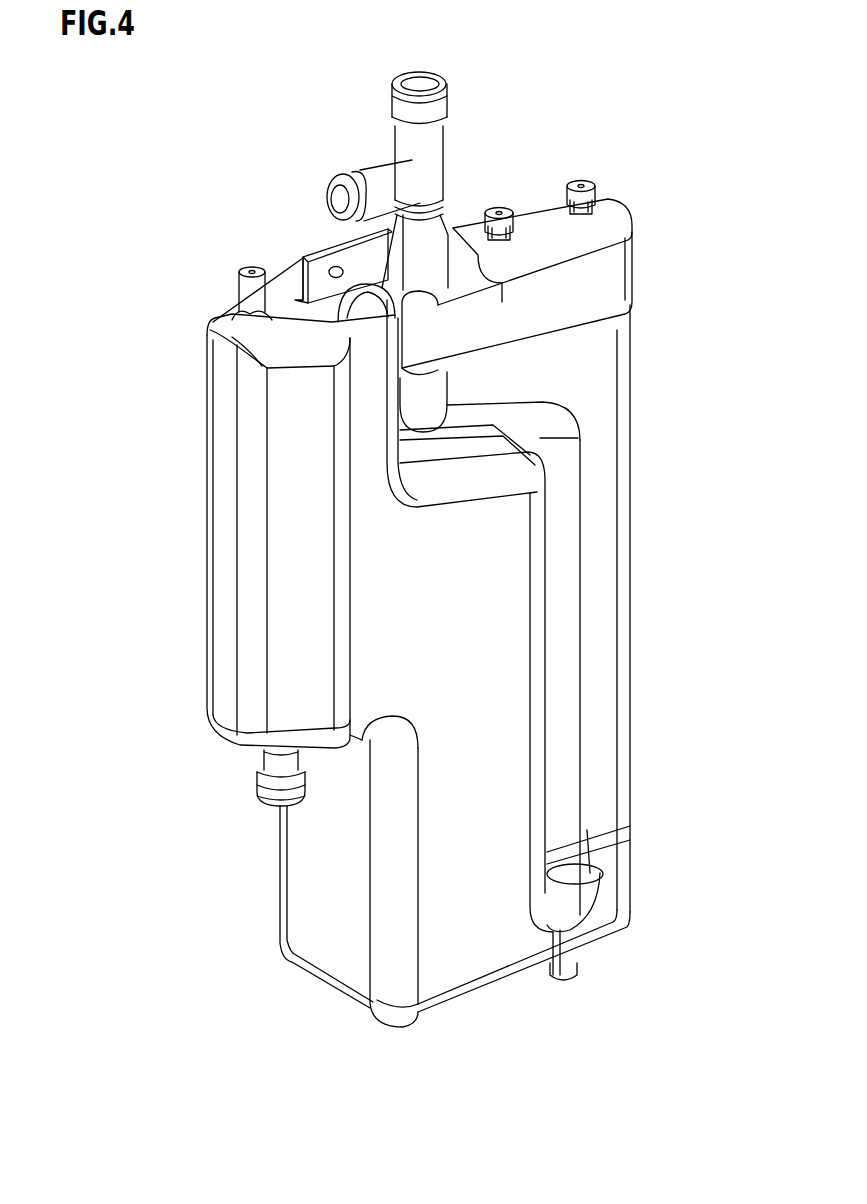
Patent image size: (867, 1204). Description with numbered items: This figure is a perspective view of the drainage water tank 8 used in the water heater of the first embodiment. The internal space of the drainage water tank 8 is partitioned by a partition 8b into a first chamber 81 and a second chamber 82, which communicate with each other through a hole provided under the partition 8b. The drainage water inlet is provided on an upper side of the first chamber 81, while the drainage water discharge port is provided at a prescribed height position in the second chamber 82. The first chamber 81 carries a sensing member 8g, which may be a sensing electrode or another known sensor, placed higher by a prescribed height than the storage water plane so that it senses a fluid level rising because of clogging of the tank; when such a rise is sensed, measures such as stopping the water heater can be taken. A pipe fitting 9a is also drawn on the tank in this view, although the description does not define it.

The drainage water tank 8 is at (410, 549).
The partition 8b is at (577, 457).
The sensing member 8g is at (577, 180).
The inlet pipe 9a is at (447, 137).
The first chamber 81 is at (607, 625).
The second chamber 82 is at (407, 618).